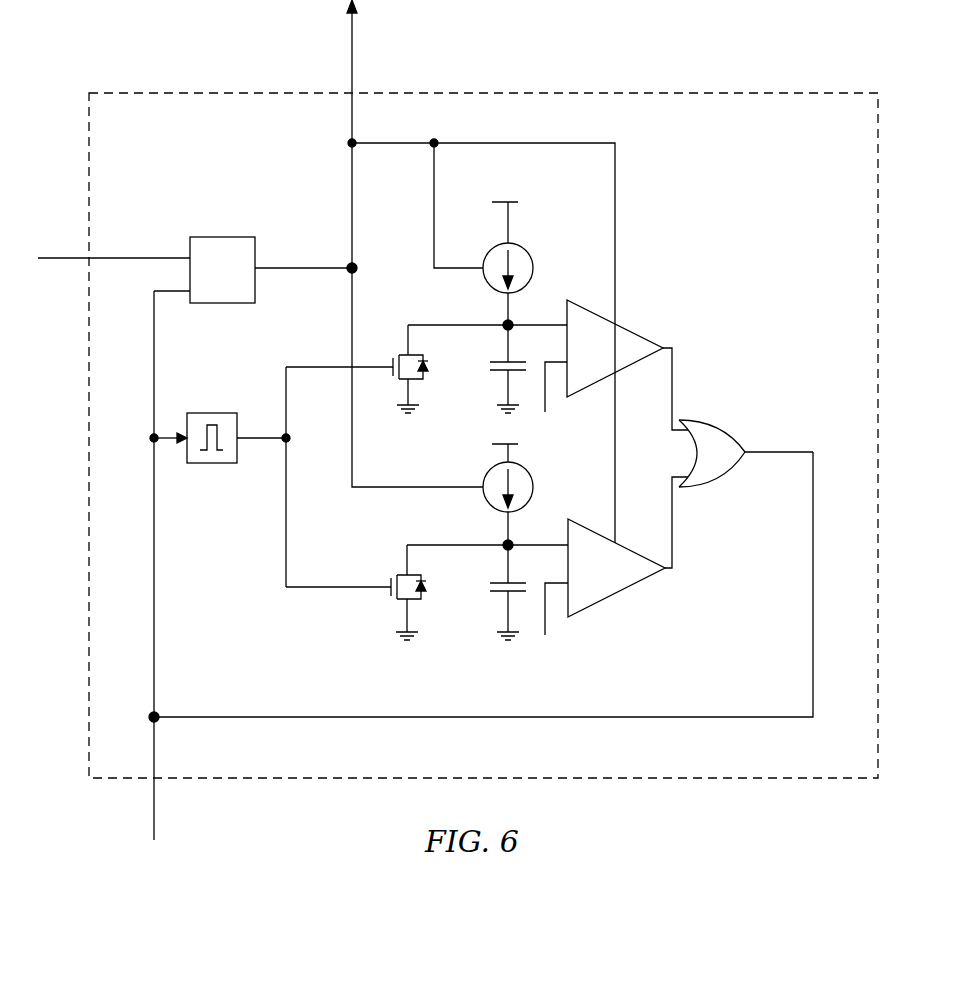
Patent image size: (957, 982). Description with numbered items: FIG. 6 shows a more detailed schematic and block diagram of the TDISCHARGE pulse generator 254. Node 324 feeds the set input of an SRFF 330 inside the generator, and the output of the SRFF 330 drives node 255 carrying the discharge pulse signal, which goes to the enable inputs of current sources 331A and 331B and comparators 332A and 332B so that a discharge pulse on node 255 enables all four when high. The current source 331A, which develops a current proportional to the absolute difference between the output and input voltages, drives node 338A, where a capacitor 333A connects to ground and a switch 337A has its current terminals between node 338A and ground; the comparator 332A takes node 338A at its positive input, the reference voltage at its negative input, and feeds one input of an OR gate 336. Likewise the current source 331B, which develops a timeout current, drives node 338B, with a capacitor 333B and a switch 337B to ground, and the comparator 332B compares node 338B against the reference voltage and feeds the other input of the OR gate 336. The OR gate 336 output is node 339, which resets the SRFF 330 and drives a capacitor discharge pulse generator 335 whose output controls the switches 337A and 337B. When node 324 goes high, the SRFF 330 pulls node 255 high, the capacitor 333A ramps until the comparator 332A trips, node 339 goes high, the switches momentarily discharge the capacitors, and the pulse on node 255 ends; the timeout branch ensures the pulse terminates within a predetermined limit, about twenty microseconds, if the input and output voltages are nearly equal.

The TDISCHARGE pulse generator 254 is at (135, 153).
The node 255 is at (352, 50).
The node 324 is at (72, 258).
The SRFF 330 is at (243, 237).
The current source 331A is at (487, 248).
The current source 331B is at (485, 507).
The comparator 332A is at (642, 337).
The comparator 332B is at (618, 592).
The capacitor 333A is at (497, 372).
The capacitor 333B is at (495, 592).
The capacitor discharge pulse generator 335 is at (197, 463).
The OR gate 336 is at (715, 422).
The switch 337A is at (407, 345).
The switch 337B is at (397, 600).
The node 338A is at (505, 321).
The node 338B is at (503, 548).
The node 339 is at (154, 793).